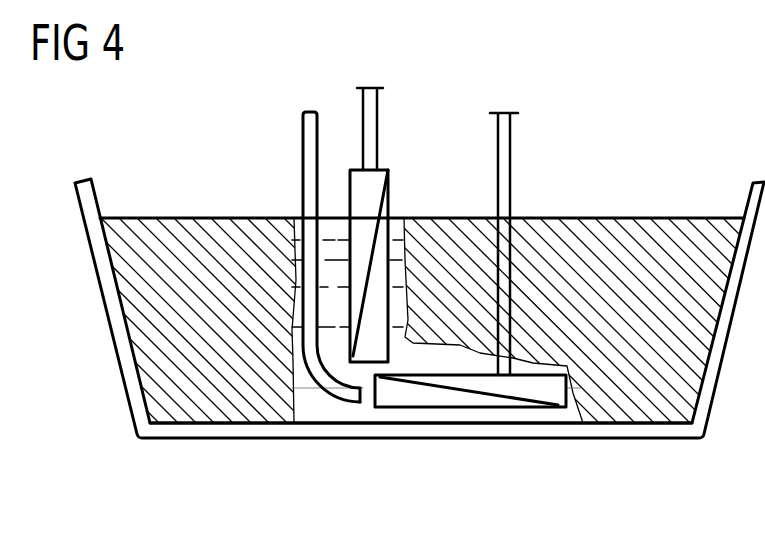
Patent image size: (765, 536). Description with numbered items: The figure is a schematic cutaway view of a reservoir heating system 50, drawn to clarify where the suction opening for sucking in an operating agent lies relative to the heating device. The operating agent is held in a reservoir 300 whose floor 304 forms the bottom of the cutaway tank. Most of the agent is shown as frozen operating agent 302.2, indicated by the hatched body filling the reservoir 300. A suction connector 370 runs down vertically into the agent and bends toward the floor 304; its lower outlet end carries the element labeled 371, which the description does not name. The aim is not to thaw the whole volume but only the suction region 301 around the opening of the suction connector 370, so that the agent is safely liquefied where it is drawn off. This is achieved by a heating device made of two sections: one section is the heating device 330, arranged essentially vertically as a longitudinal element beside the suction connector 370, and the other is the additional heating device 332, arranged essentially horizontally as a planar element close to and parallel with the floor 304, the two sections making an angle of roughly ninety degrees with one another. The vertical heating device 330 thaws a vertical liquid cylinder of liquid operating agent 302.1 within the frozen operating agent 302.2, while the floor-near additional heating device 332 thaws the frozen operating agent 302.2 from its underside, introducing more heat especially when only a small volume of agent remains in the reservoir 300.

The reservoir heating system 50 is at (652, 121).
The reservoir 300 is at (110, 290).
The floor 304 is at (530, 443).
The frozen operating agent 302.2 is at (195, 403).
The liquid operating agent 302.1 is at (312, 417).
The suction region 301 is at (373, 410).
The suction connector 370 is at (301, 132).
The tube outlet end 371 is at (365, 400).
The heating device 330 is at (388, 205).
The additional heating device 332 is at (475, 410).